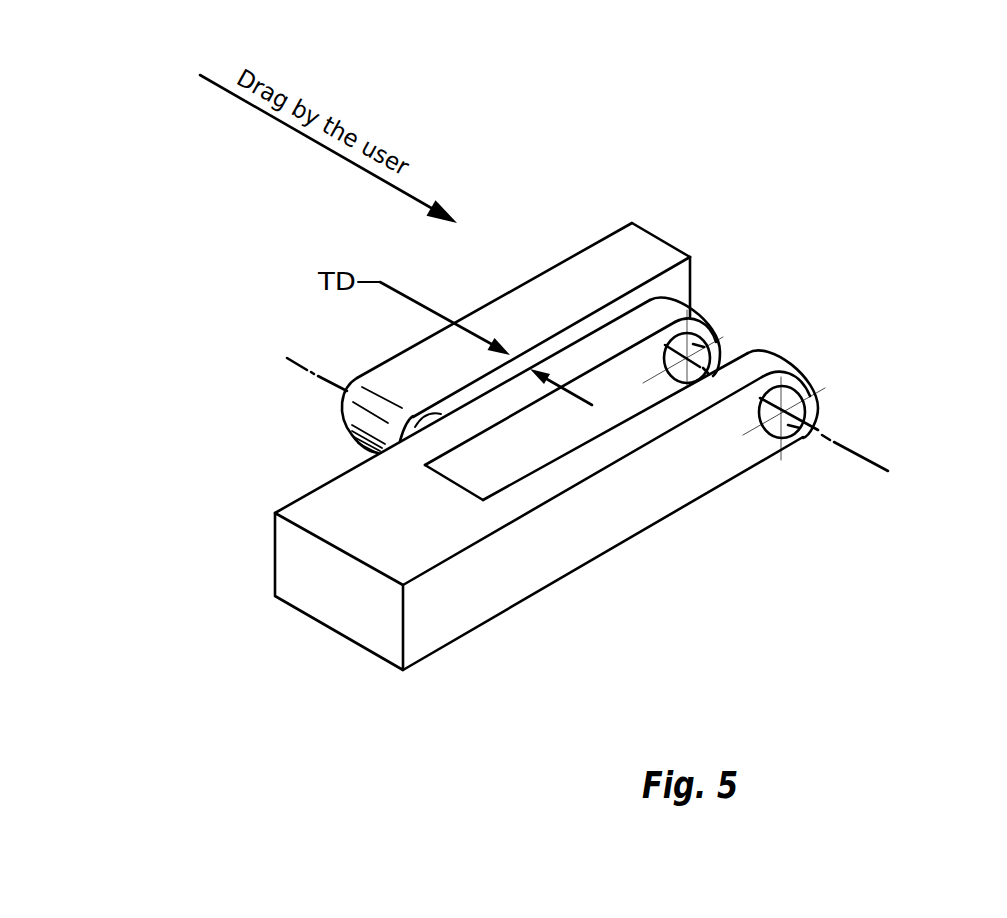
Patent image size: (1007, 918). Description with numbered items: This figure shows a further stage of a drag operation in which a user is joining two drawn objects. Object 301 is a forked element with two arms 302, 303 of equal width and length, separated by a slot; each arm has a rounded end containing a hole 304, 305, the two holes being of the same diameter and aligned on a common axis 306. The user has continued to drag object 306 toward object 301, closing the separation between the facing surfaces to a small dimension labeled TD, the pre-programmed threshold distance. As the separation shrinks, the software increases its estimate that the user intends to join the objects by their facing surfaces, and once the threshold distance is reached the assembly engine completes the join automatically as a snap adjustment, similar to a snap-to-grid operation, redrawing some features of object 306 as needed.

The object 301 is at (341, 496).
The arm 302 is at (581, 353).
The arm 303 is at (665, 467).
The hole 304 is at (709, 338).
The hole 305 is at (787, 425).
The object 306 is at (643, 250).